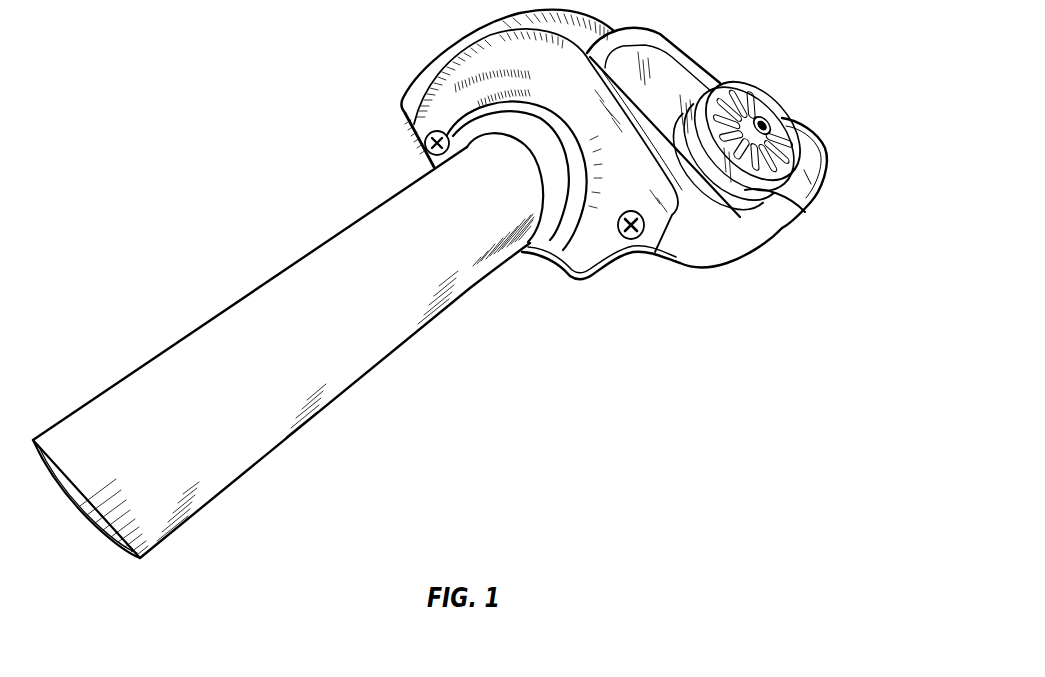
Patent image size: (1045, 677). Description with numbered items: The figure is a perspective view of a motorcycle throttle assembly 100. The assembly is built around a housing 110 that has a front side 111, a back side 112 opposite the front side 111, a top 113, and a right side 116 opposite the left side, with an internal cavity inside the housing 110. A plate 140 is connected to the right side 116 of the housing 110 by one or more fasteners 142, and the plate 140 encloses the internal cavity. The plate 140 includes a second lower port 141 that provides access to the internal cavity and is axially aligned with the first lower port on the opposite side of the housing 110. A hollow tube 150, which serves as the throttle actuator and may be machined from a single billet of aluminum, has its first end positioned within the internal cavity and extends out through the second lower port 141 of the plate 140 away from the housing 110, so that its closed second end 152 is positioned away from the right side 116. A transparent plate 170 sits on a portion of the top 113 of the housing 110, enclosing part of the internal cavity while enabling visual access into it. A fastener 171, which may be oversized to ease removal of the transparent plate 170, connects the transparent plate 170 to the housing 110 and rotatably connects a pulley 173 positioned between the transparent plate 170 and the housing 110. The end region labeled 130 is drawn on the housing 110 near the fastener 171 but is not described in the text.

The throttle assembly 100 is at (190, 66).
The housing 110 is at (697, 260).
The front side 111 is at (824, 184).
The back side 112 is at (408, 74).
The top 113 is at (817, 168).
The right side 116 is at (401, 130).
The end cap 130 is at (809, 128).
The plate 140 is at (590, 254).
The second lower port 141 is at (542, 232).
The fasteners 142 is at (427, 155).
The hollow tube 150 is at (267, 440).
The second end 152 is at (103, 531).
The transparent plate 170 is at (667, 73).
The fastener 171 is at (766, 108).
The pulley 173 is at (803, 197).